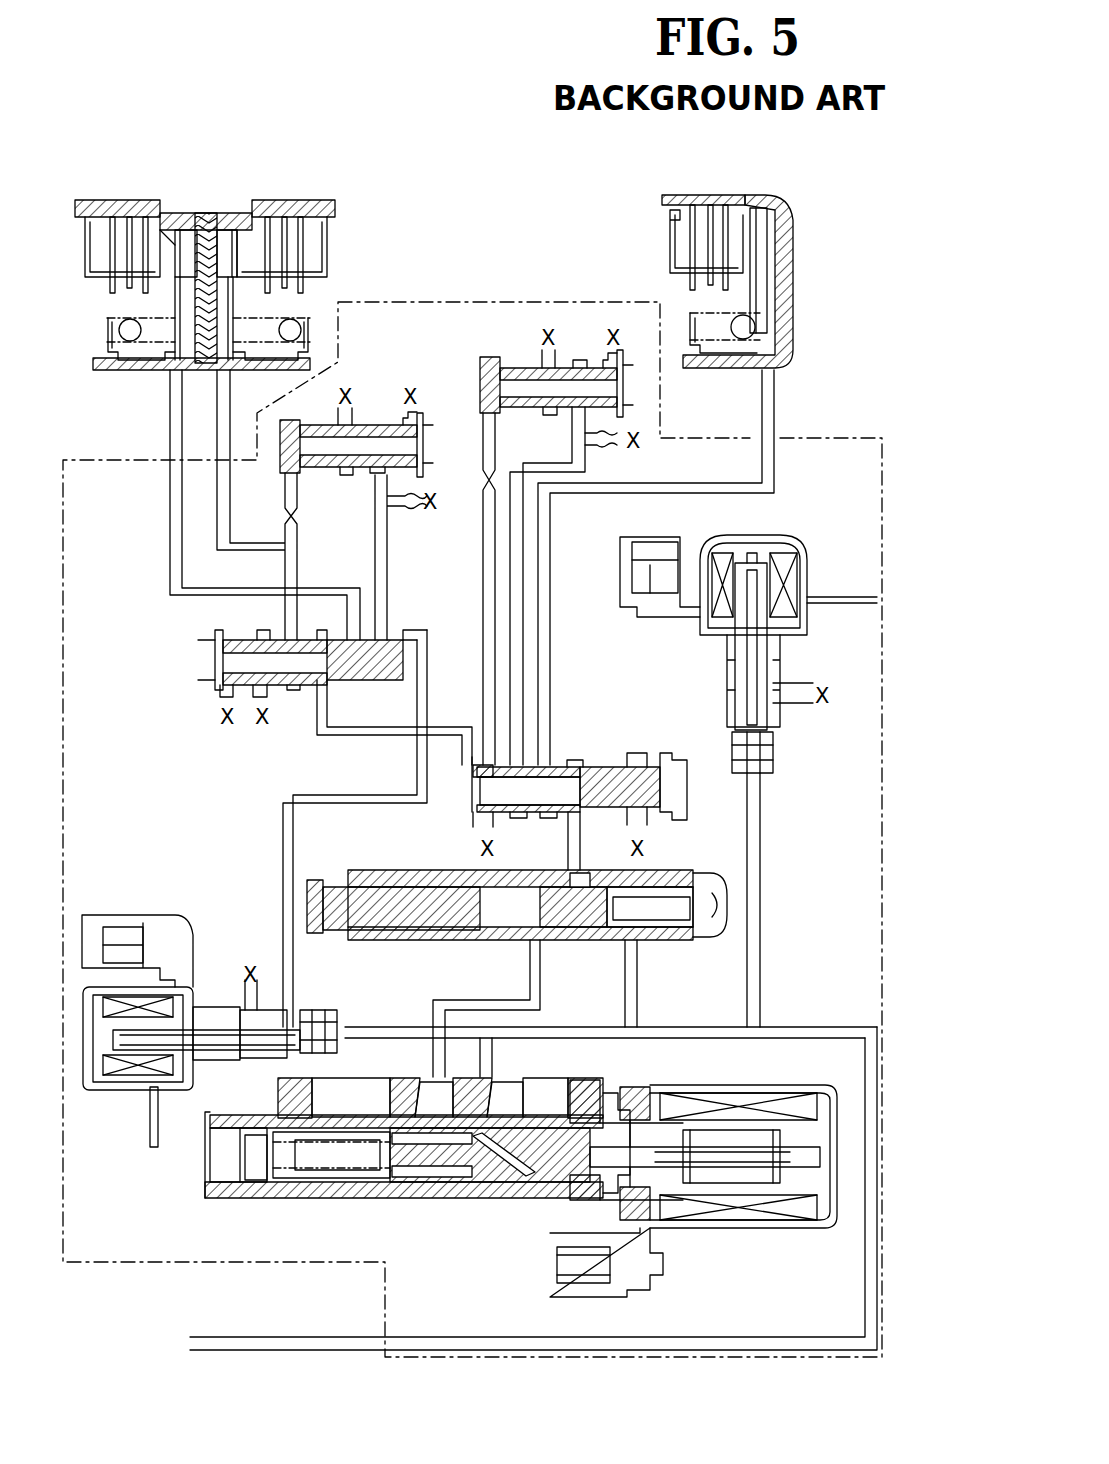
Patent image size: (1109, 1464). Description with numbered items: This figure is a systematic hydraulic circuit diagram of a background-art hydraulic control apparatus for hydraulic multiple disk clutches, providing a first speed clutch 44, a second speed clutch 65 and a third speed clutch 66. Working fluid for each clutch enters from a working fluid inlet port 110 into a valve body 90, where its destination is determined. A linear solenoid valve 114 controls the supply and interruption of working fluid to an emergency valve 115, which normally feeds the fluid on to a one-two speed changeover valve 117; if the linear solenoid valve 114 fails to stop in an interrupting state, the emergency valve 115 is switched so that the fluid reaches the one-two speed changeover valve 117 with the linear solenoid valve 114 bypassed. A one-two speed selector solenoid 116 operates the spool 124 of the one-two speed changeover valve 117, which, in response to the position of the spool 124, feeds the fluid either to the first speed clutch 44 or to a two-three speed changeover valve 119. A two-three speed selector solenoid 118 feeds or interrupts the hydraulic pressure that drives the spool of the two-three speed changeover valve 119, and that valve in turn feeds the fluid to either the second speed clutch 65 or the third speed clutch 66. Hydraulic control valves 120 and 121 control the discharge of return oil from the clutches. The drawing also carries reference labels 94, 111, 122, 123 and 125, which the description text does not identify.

The 1st speed clutch 44 is at (721, 187).
The 2nd speed clutch 65 is at (137, 191).
The 3rd speed clutch 66 is at (277, 191).
The valve body 90 is at (468, 301).
The oil passage 94 is at (797, 400).
The working fluid inlet port 110 is at (400, 1334).
The oil passage 111 is at (781, 447).
The linear solenoid valve 114 is at (485, 1206).
The emergency valve 115 is at (517, 921).
The 1-2 speed selector solenoid 116 is at (773, 533).
The 1-2 speed changeover valve 117 is at (596, 768).
The 2-3 speed selector solenoid 118 is at (148, 909).
The 2-3 speed changeover valve 119 is at (204, 668).
The hydraulic control valve 120 is at (467, 368).
The hydraulic control valve 121 is at (379, 405).
The spool 122 is at (392, 910).
The plug 123 is at (570, 915).
The spool 124 is at (643, 793).
The spool 125 is at (526, 790).